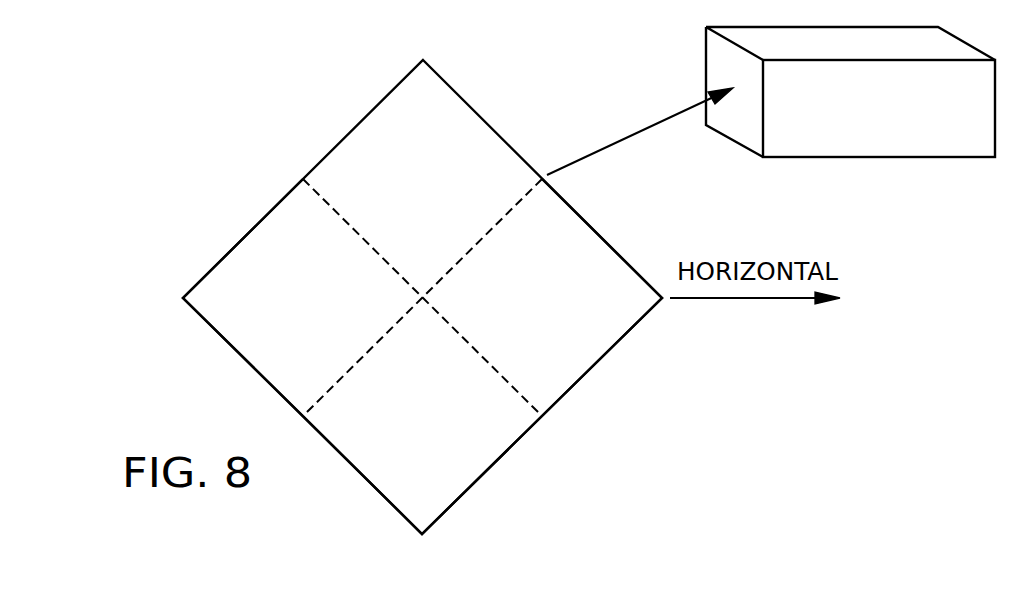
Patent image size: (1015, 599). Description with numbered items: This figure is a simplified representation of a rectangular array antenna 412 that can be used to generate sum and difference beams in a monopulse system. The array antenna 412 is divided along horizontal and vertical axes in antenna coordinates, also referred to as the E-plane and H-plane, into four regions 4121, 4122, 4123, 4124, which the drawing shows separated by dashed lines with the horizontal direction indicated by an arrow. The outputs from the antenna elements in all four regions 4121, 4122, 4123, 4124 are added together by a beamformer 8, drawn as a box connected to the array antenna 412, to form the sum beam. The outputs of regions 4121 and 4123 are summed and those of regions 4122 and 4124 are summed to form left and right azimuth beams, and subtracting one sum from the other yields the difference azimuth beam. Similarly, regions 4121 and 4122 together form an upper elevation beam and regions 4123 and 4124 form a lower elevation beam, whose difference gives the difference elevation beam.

The array antenna 412 is at (521, 151).
The first region of the array antenna 4121 is at (422, 288).
The second region of the array antenna 4122 is at (592, 297).
The third region of the array antenna 4123 is at (256, 297).
The fourth region of the array antenna 4124 is at (422, 469).
The beamformer 8 is at (863, 157).